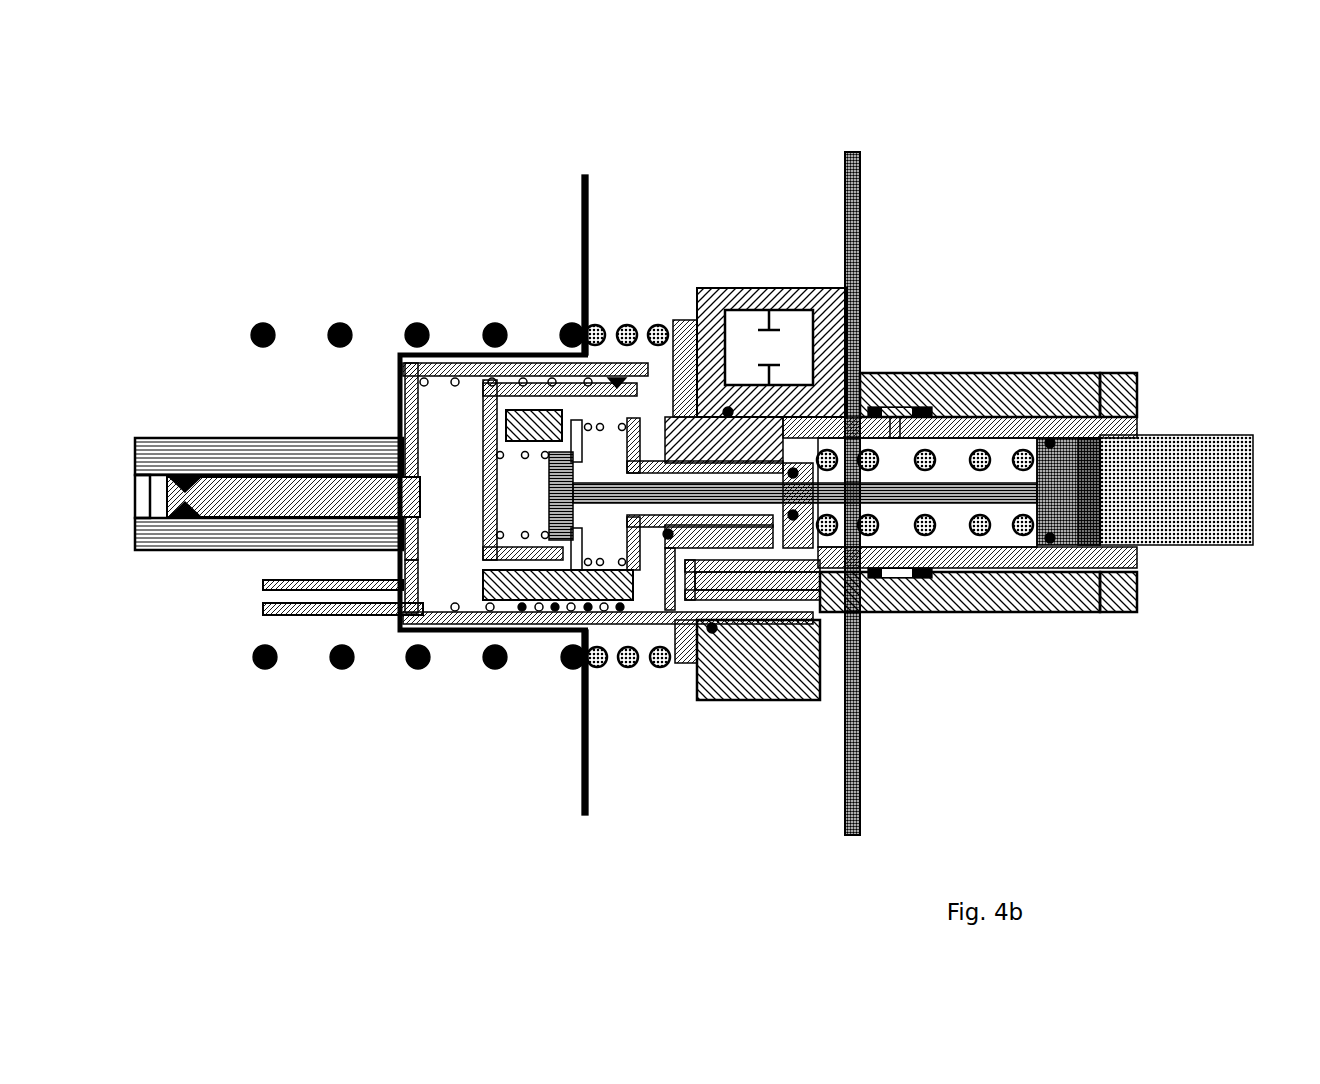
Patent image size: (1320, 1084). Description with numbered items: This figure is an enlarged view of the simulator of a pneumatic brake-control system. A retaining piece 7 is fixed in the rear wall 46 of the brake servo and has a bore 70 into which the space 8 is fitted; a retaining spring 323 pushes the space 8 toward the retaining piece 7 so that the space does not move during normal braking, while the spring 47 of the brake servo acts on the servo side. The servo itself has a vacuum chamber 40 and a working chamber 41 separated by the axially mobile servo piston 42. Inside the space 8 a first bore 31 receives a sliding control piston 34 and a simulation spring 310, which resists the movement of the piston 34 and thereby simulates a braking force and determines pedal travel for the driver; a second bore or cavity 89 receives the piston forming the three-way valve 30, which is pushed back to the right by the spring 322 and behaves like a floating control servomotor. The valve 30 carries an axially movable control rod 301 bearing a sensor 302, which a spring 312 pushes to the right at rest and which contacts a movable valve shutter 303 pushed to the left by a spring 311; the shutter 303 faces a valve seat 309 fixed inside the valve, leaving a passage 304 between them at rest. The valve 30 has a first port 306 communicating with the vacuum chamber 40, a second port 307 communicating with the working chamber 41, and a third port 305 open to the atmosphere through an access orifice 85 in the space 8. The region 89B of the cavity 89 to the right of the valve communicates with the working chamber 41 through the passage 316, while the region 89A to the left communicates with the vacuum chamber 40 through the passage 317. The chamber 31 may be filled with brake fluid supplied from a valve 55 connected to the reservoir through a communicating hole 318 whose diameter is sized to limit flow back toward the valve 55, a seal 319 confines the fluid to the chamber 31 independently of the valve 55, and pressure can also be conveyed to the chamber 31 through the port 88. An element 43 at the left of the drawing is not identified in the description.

The retaining piece 7 is at (1108, 365).
The space 8 is at (860, 357).
The three-way valve 30 is at (470, 410).
The first bore 31 is at (952, 530).
The control piston 34 is at (1150, 435).
The vacuum chamber 40 is at (421, 194).
The working chamber 41 is at (674, 194).
The servo piston 42 is at (585, 172).
The connecting tube 43 is at (237, 507).
The rear wall 46 is at (847, 150).
The spring of the brake servo 47 is at (337, 323).
The valve 55 is at (860, 330).
The bore 70 is at (1082, 569).
The access orifice 85 is at (858, 612).
The port 88 is at (1052, 562).
The second bore 89 is at (600, 670).
The region of the cavity 89A is at (442, 527).
The region of the cavity 89B is at (661, 670).
The control rod 301 is at (1000, 483).
The sensor 302 is at (534, 632).
The valve shutter 303 is at (566, 360).
The passage 304 is at (531, 410).
The third port 305 is at (842, 530).
The first port 306 is at (463, 562).
The second port 307 is at (658, 403).
The valve seat 309 is at (478, 357).
The simulation spring 310 is at (975, 537).
The spring 311 is at (564, 632).
The spring 312 is at (473, 626).
The passage 316 is at (627, 326).
The passage 317 is at (262, 597).
The communicating hole 318 is at (455, 443).
The seal 319 is at (918, 406).
The spring 322 is at (522, 632).
The retaining spring 323 is at (632, 670).